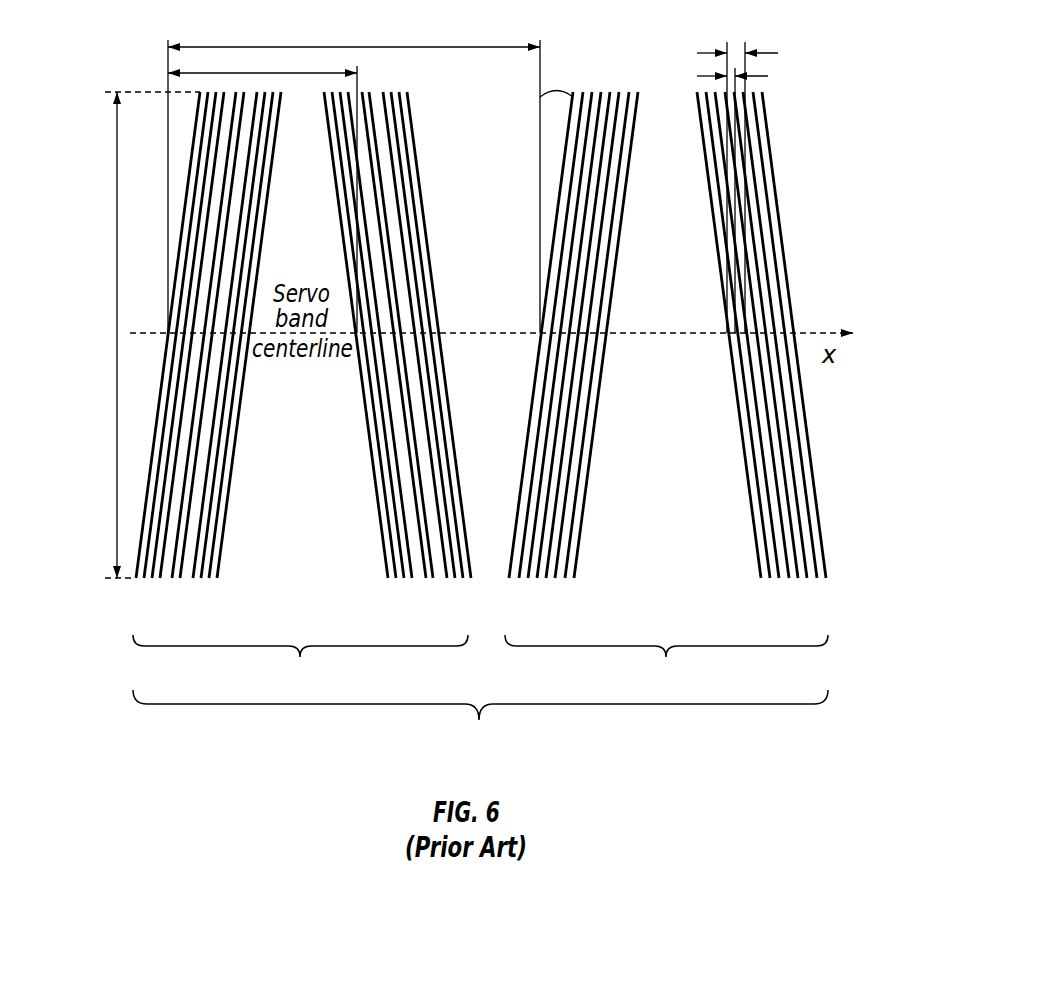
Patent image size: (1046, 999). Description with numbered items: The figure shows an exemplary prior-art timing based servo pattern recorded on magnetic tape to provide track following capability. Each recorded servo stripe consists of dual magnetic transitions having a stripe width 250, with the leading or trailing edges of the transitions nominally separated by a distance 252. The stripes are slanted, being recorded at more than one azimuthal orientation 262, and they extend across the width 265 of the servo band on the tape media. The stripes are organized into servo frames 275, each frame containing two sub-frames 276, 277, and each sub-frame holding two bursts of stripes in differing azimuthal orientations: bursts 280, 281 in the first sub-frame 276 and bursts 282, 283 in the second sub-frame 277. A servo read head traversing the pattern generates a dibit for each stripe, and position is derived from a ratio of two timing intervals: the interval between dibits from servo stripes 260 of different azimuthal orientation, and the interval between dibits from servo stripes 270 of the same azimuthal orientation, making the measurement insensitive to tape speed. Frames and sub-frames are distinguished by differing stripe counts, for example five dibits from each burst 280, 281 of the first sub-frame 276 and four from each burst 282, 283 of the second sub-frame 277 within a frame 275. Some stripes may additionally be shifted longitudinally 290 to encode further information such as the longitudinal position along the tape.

The servo stripe width 250 is at (768, 76).
The edge separation distance 252 is at (778, 53).
The servo stripe pair spacing 260 is at (280, 72).
The azimuthal orientation 262 is at (560, 90).
The servo band width 265 is at (117, 262).
The same-orientation stripe spacing 270 is at (422, 47).
The servo frame 275 is at (480, 723).
The first sub-frame 276 is at (300, 664).
The second sub-frame 277 is at (666, 664).
The first burst 280 is at (217, 585).
The second burst 281 is at (468, 585).
The third burst 282 is at (572, 585).
The fourth burst 283 is at (828, 585).
The longitudinal shift 290 is at (173, 452).